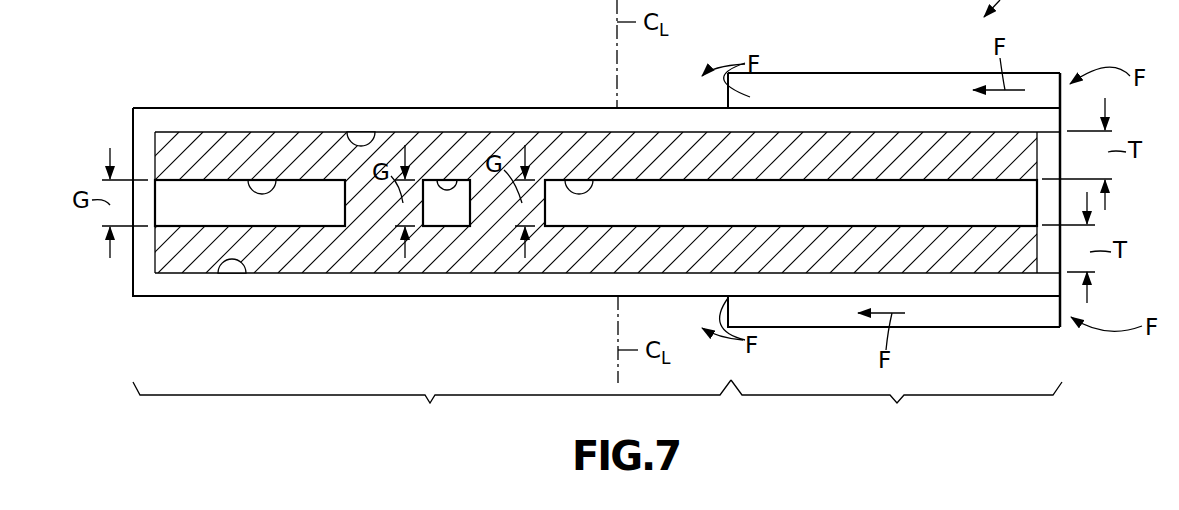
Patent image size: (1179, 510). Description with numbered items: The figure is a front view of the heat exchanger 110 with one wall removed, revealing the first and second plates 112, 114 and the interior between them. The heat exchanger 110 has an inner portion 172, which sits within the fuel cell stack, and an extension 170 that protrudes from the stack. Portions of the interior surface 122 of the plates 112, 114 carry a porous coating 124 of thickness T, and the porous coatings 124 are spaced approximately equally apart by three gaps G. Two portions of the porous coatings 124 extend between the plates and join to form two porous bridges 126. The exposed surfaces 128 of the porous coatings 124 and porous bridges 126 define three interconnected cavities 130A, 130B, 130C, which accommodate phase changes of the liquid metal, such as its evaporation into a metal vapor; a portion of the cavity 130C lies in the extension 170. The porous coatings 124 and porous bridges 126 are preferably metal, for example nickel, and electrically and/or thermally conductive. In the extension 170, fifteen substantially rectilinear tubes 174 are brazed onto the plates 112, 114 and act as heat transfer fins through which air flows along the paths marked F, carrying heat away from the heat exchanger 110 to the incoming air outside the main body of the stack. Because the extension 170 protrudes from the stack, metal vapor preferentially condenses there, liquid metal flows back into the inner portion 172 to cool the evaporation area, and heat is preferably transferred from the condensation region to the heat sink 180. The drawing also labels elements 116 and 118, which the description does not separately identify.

The heat exchanger 110 is at (870, 503).
The first plate 112 is at (1041, 118).
The second plate 114 is at (1015, 285).
The outer wall 116 is at (142, 252).
The body 118 is at (224, 105).
The interior surface 122 is at (375, 132).
The porous coating 124 is at (903, 150).
The porous bridge 126 is at (378, 210).
The exposed surface 128 is at (277, 180).
The cavity 130A is at (291, 197).
The cavity 130B is at (445, 202).
The cavity 130C is at (816, 204).
The extension 170 is at (896, 408).
The inner portion 172 is at (432, 408).
The rectilinear tube 174 is at (930, 88).
The heat sink 180 is at (1075, 509).